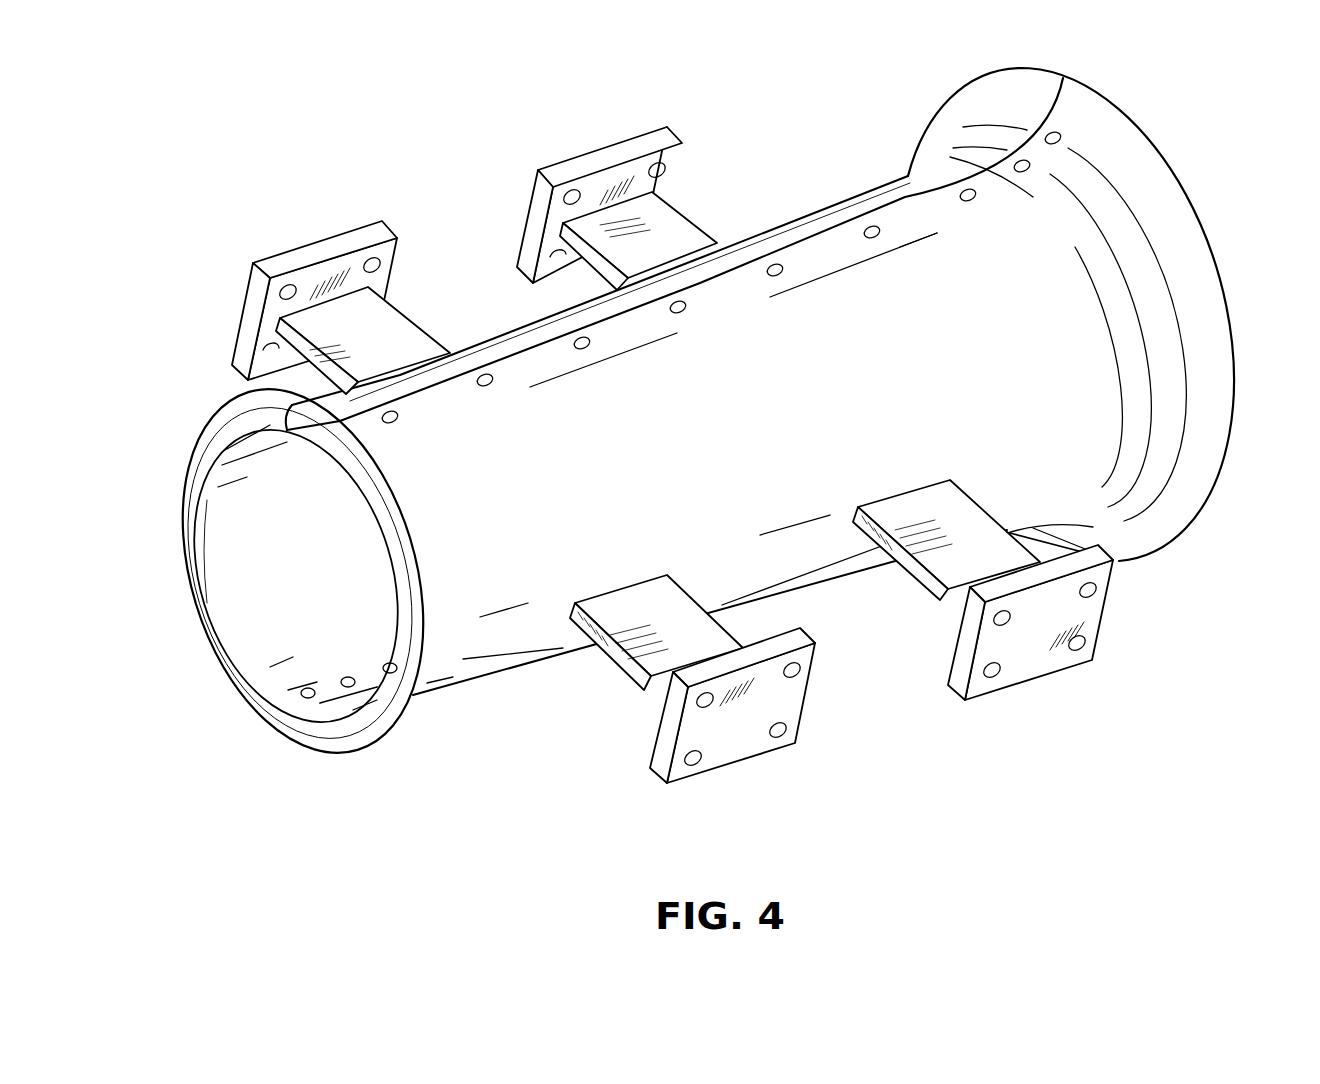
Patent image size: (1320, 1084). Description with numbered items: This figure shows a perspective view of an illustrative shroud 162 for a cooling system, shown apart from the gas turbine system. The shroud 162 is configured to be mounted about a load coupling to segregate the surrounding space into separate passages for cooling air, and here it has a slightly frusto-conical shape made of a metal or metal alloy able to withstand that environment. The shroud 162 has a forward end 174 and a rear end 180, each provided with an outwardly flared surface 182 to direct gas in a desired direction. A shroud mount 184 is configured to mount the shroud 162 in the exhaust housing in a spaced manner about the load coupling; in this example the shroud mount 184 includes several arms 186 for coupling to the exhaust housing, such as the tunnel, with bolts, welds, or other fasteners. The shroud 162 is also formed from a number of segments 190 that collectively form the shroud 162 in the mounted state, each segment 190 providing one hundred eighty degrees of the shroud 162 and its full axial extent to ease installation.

The shroud 162 is at (855, 602).
The forward end 174 is at (280, 680).
The rear end 180 is at (1098, 312).
The outwardly flared surface 182 is at (722, 456).
The shroud mount 184 is at (607, 466).
The arms 186 is at (300, 352).
The segments 190 is at (240, 585).